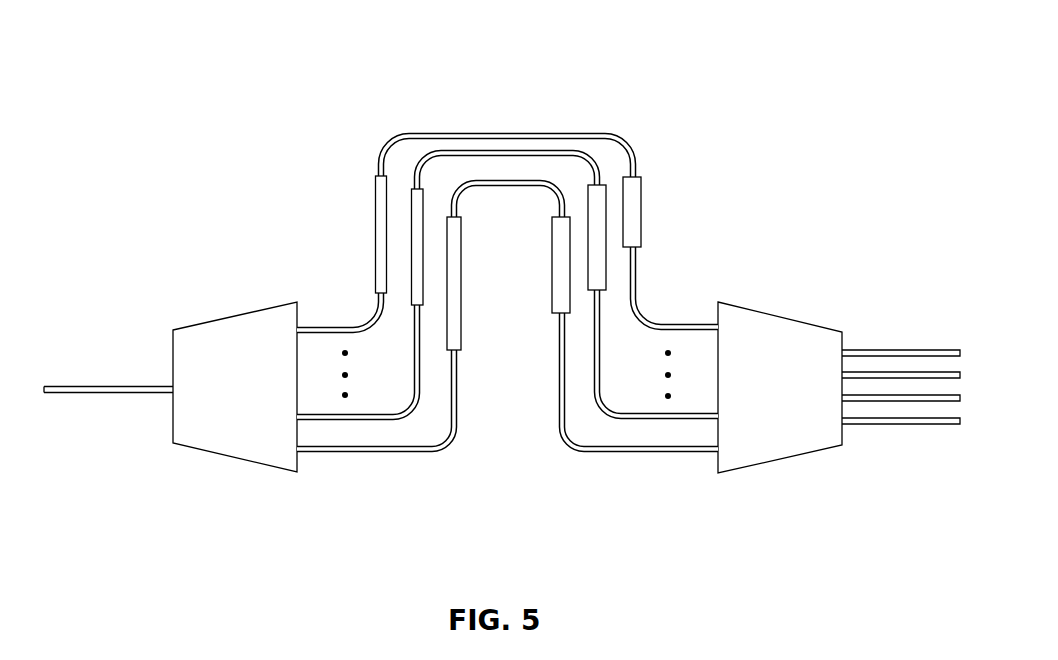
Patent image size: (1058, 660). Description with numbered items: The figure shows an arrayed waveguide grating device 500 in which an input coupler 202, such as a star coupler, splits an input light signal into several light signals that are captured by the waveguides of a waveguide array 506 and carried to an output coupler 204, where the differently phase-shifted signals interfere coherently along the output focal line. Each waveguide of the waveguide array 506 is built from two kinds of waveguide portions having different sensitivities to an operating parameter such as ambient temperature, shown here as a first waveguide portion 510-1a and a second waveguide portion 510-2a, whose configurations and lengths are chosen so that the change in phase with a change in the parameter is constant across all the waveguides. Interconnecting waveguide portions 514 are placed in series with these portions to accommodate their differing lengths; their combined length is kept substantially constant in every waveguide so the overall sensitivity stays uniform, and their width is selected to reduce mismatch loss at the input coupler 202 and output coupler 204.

The arrayed waveguide grating device 500 is at (644, 96).
The input coupler 202 is at (223, 458).
The output coupler 204 is at (782, 458).
The waveguide array 506 is at (507, 324).
The interconnecting waveguide portion 514 is at (407, 134).
The first waveguide portion 510-1a is at (375, 196).
The second waveguide portion 510-2a is at (641, 200).